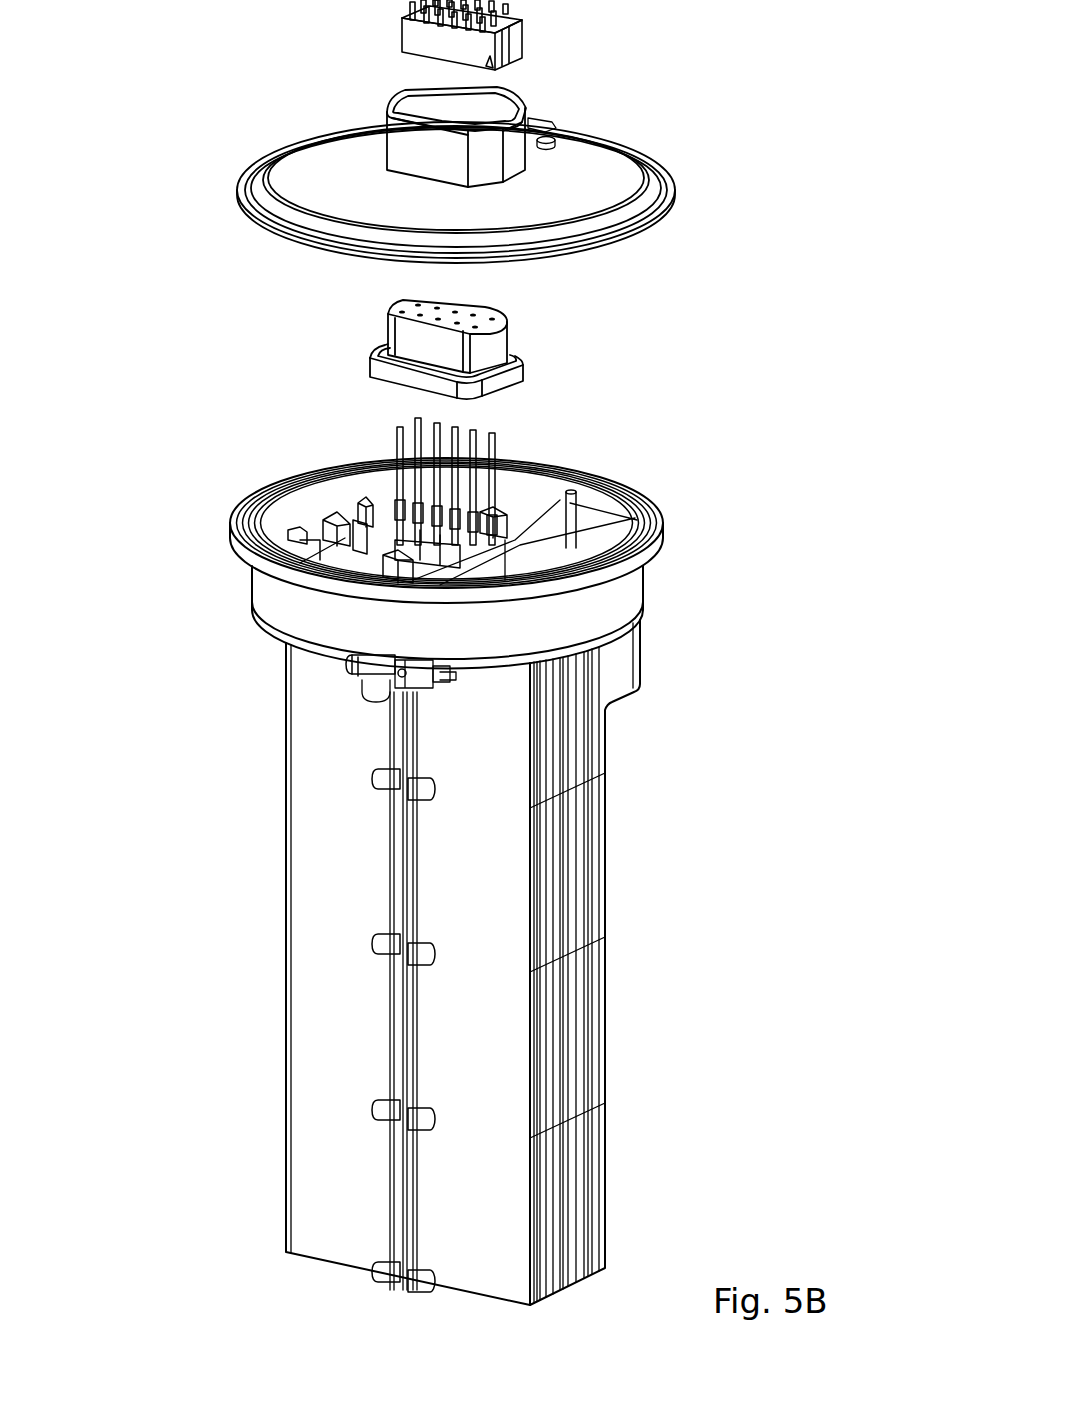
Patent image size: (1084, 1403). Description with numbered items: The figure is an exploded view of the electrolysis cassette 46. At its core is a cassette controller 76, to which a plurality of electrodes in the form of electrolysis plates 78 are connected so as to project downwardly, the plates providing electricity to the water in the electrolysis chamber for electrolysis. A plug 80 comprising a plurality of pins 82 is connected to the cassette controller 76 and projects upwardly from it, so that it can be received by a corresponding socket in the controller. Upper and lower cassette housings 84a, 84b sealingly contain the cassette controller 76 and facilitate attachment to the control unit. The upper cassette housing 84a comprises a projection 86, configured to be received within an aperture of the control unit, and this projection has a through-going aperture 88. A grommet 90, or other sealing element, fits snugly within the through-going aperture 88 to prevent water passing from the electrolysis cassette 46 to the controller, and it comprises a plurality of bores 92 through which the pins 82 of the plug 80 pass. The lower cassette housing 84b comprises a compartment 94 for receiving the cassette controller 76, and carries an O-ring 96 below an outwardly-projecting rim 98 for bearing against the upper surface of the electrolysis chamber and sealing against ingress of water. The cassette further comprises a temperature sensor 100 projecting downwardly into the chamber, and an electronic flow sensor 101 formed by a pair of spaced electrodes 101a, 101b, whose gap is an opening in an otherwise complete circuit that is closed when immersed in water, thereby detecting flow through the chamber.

The electrolysis cassette 46 is at (722, 525).
The cassette controller 76 is at (322, 500).
The electrolysis plates 78 is at (580, 868).
The plug 80 is at (548, 462).
The pins 82 is at (473, 430).
The upper cassette housing 84a is at (606, 177).
The lower cassette housing 84b is at (615, 588).
The projection 86 is at (532, 148).
The through-going aperture 88 is at (473, 110).
The grommet 90 is at (510, 340).
The bores 92 is at (388, 313).
The compartment 94 is at (540, 490).
The O-ring 96 is at (300, 590).
The outwardly-projecting rim 98 is at (232, 530).
The temperature sensor 100 is at (365, 684).
The electronic flow sensor 101 is at (386, 700).
The electrode 101a is at (425, 672).
The electrode 101b is at (413, 683).